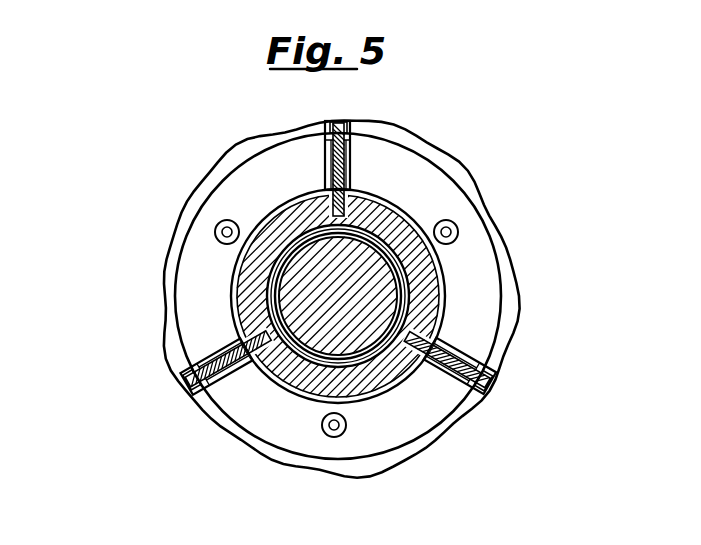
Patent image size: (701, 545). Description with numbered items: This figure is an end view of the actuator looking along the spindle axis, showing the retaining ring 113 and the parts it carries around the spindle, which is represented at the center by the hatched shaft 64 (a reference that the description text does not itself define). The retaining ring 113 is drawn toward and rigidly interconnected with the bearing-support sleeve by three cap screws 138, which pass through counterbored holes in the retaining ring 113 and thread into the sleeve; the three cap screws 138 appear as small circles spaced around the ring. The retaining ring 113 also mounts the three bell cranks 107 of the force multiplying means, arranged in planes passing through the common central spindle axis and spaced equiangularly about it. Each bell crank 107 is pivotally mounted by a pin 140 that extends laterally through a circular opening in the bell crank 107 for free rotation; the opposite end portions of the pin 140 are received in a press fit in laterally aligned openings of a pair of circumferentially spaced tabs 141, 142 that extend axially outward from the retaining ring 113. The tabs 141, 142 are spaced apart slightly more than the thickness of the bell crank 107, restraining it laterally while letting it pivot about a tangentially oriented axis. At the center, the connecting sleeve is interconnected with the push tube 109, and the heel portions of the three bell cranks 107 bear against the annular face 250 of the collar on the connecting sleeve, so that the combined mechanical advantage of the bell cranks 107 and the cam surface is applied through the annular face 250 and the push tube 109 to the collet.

The retaining ring 113 is at (456, 196).
The cap screws 138 is at (218, 224).
The annular face 250 is at (287, 380).
The push tube 109 is at (363, 360).
The shaft 64 is at (380, 289).
The pin 140 is at (330, 121).
The tab 141 is at (326, 178).
The tab 142 is at (352, 137).
The bell crank 107 is at (347, 122).